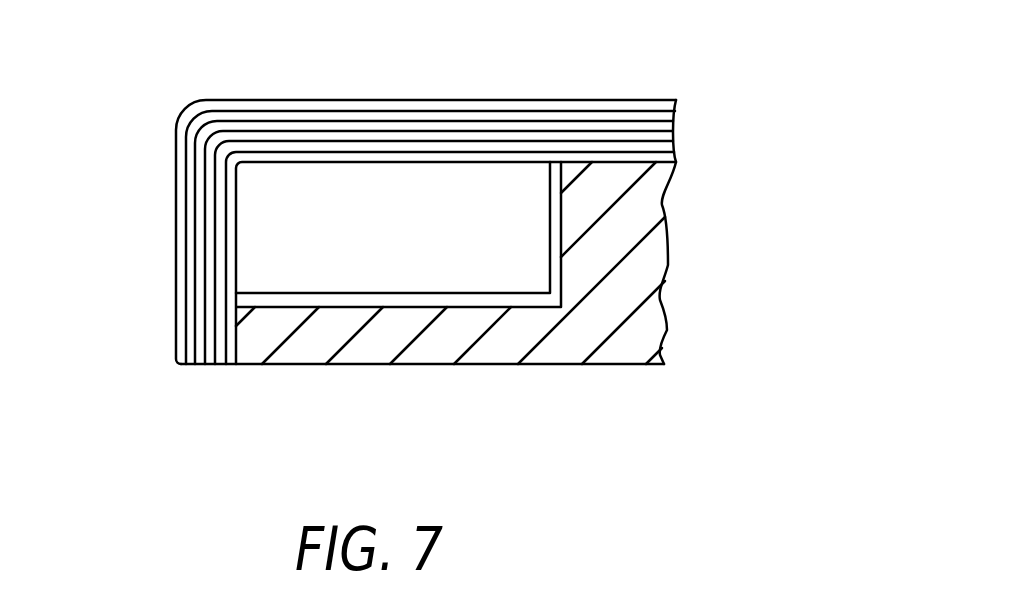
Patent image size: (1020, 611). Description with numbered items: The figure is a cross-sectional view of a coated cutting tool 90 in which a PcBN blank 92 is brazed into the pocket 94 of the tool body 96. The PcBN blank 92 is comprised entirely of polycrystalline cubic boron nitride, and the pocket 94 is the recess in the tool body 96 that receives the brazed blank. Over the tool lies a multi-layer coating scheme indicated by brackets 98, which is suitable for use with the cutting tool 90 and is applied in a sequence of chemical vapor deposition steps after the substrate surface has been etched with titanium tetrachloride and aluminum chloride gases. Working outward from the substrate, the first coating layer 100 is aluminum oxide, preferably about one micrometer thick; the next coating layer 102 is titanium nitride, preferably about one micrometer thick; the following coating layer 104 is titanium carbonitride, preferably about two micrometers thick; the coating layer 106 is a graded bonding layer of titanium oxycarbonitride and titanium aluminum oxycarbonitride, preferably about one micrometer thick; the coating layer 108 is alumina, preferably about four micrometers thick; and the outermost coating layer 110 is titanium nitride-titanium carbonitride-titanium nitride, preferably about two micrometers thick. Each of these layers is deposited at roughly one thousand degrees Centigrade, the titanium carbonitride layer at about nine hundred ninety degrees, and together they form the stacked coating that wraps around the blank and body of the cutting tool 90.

The coated cutting tool 90 is at (770, 101).
The PcBN blank 92 is at (512, 236).
The pocket 94 is at (527, 297).
The tool body 96 is at (638, 325).
The coating scheme 98 is at (708, 102).
The coating layer 100 is at (236, 328).
The coating layer 102 is at (219, 288).
The coating layer 104 is at (209, 254).
The coating layer 106 is at (194, 223).
The coating layer 108 is at (187, 188).
The coating layer 110 is at (175, 148).